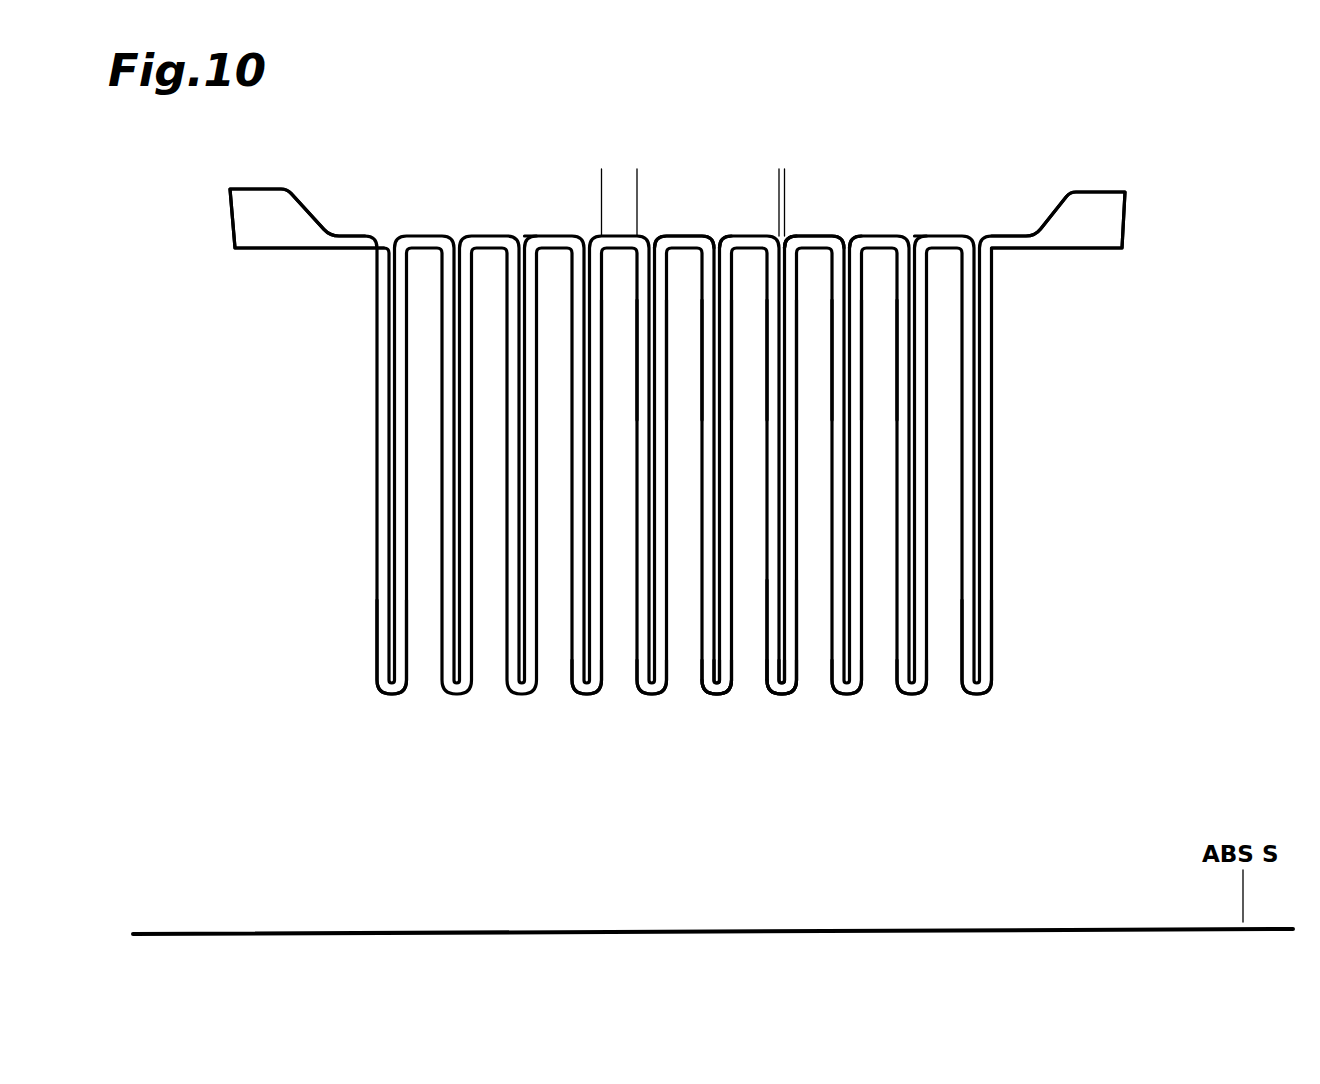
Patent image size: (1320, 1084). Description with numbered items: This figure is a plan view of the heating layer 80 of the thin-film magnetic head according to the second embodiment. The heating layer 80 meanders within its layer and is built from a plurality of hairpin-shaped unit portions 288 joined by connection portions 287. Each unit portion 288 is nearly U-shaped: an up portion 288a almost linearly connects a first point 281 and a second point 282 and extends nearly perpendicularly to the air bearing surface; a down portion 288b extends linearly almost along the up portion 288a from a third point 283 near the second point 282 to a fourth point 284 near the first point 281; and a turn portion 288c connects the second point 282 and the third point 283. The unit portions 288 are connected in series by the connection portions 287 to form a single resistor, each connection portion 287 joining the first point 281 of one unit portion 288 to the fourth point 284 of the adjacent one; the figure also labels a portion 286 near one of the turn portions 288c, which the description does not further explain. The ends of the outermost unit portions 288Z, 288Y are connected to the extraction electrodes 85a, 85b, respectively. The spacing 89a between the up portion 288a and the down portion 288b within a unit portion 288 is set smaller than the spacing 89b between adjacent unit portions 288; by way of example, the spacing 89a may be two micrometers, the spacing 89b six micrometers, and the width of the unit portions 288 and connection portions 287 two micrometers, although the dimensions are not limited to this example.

The heating layer 80 is at (597, 824).
The extraction electrode 85a is at (259, 196).
The extraction electrode 85b is at (1091, 197).
The spacing 89a is at (812, 169).
The spacing 89b is at (668, 169).
The first point 281 is at (707, 236).
The second point 282 is at (712, 694).
The third point 283 is at (722, 697).
The fourth point 284 is at (720, 241).
The connecting portion 286 is at (842, 697).
The connection portion 287 is at (553, 237).
The unit portion 288 is at (717, 696).
The outermost unit portion 288Z is at (377, 653).
The outermost unit portion 288Y is at (992, 653).
The up portion 288a is at (773, 582).
The down portion 288b is at (790, 582).
The turn portion 288c is at (783, 697).